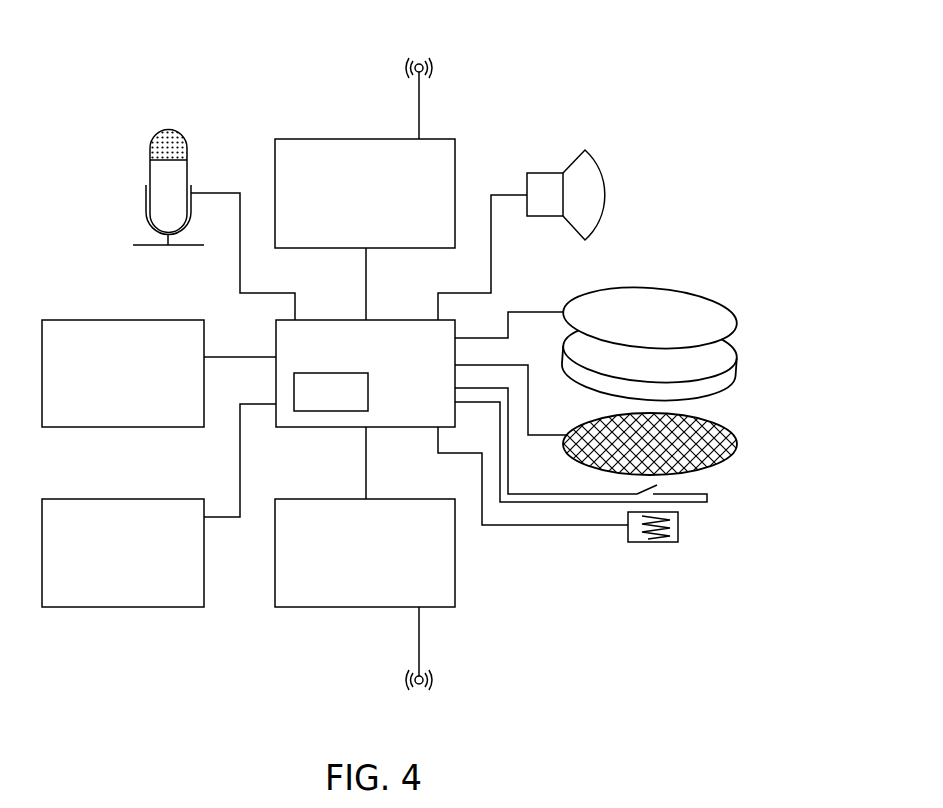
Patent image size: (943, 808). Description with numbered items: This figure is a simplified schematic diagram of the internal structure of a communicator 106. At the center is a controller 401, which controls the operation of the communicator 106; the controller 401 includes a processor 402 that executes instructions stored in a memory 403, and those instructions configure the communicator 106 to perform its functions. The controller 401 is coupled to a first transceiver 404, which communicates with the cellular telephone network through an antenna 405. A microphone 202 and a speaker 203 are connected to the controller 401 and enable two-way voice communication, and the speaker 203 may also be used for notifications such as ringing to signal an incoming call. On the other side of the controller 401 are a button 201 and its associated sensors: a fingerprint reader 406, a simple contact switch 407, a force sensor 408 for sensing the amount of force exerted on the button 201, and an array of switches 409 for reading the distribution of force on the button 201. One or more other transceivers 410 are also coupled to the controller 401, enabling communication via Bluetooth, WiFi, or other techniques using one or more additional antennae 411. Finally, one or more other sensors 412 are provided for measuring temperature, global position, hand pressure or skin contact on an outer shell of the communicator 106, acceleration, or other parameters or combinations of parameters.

The communicator 106 is at (190, 36).
The microphone 202 is at (156, 167).
The speaker 203 is at (581, 163).
The first transceiver 404 is at (280, 154).
The antenna 405 is at (417, 128).
The other sensors 412 is at (88, 329).
The controller 401 is at (435, 421).
The processor 402 is at (349, 402).
The memory 403 is at (103, 600).
The other transceivers 410 is at (456, 576).
The additional antennae 411 is at (420, 648).
The fingerprint reader 406 is at (735, 322).
The button 201 is at (735, 377).
The array of switches 409 is at (737, 450).
The contact switch 407 is at (707, 495).
The force sensor 408 is at (680, 528).